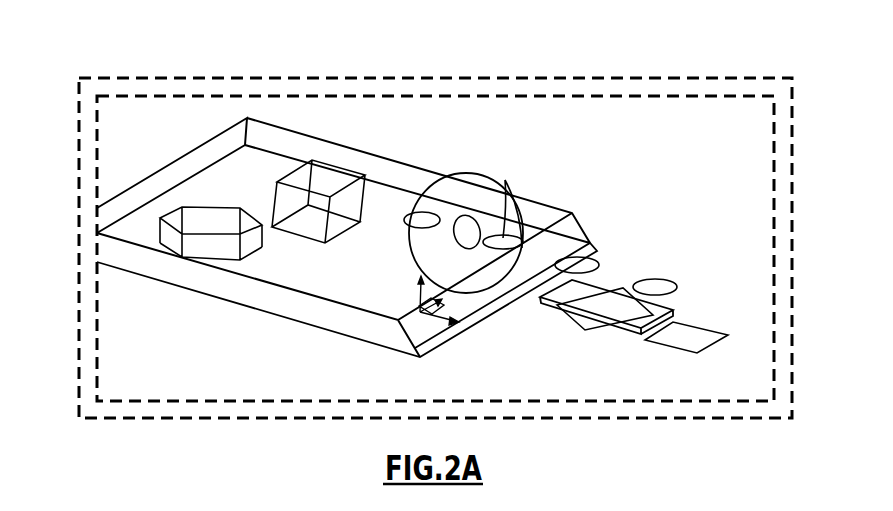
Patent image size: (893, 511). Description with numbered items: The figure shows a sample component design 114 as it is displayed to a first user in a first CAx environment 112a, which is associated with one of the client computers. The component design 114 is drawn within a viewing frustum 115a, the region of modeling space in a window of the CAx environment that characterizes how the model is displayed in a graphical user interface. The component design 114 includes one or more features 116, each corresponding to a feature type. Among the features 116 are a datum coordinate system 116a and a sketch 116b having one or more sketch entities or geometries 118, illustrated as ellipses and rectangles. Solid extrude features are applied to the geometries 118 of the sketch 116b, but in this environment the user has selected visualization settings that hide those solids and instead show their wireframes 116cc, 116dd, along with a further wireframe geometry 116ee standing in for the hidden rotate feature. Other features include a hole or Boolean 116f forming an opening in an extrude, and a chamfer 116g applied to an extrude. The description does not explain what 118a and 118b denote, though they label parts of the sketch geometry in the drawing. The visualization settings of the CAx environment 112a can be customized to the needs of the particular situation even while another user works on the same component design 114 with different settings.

The first CAx environment 112a is at (217, 76).
The viewing frustum 115a is at (128, 88).
The component design 114 is at (188, 152).
The features 116 is at (641, 281).
The datum coordinate system 116a is at (412, 340).
The sketch 116b is at (683, 303).
The wireframe 116cc is at (403, 162).
The wireframe 116dd is at (345, 167).
The wireframe geometry 116ee is at (493, 177).
The hole or Boolean 116f is at (203, 204).
The chamfer 116g is at (414, 333).
The sketch entities or geometries 118 is at (488, 322).
The object pedestal 118a is at (272, 228).
The fin feature 118b is at (505, 180).